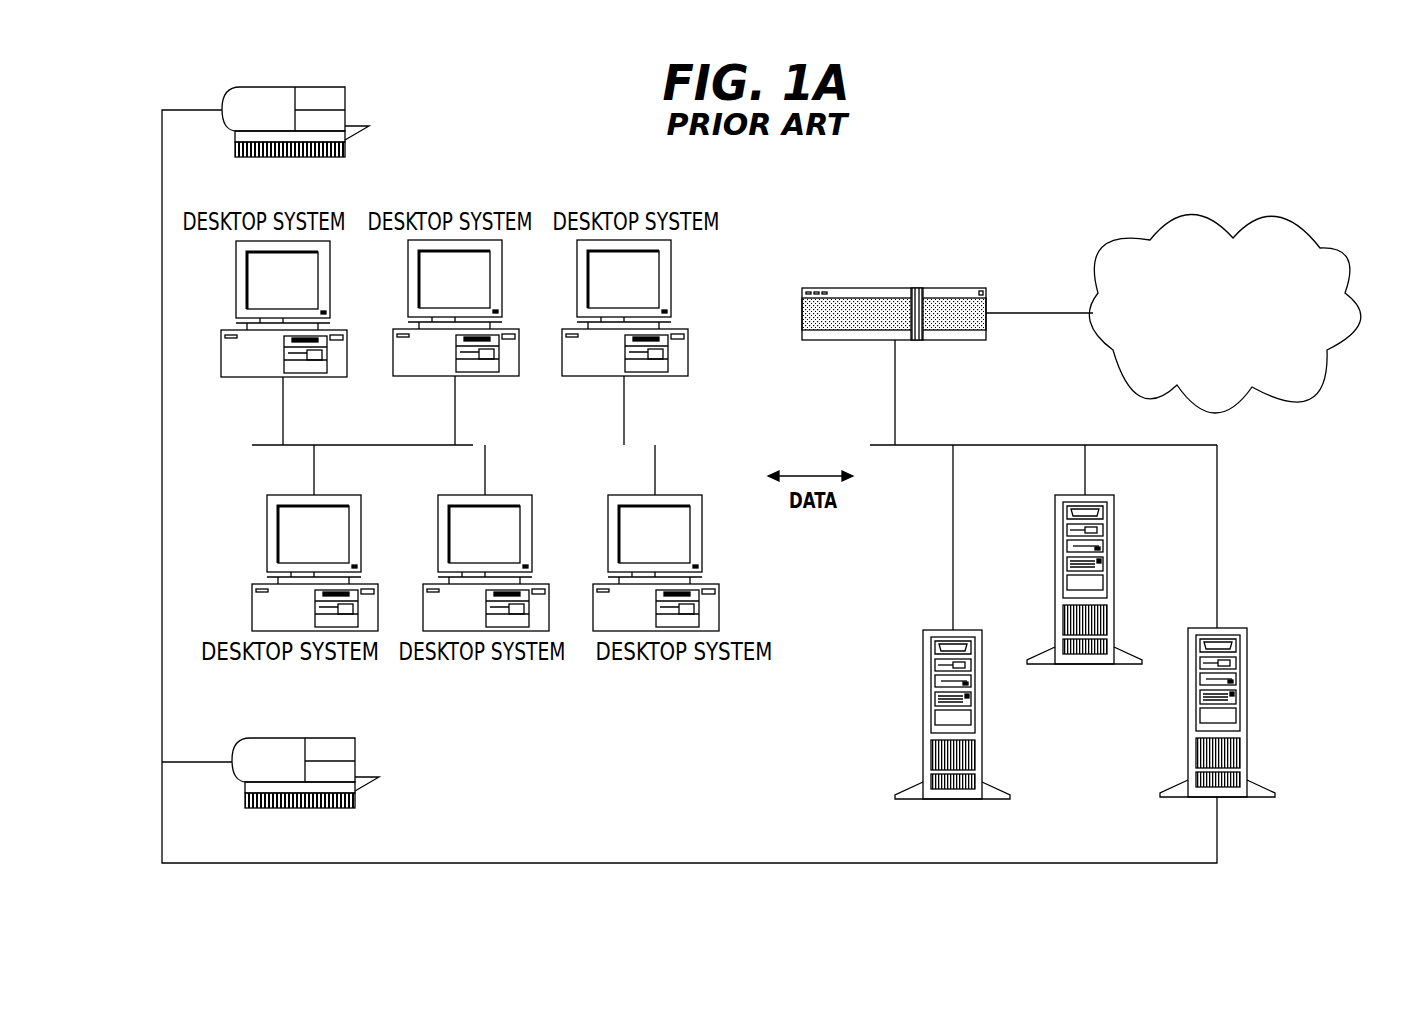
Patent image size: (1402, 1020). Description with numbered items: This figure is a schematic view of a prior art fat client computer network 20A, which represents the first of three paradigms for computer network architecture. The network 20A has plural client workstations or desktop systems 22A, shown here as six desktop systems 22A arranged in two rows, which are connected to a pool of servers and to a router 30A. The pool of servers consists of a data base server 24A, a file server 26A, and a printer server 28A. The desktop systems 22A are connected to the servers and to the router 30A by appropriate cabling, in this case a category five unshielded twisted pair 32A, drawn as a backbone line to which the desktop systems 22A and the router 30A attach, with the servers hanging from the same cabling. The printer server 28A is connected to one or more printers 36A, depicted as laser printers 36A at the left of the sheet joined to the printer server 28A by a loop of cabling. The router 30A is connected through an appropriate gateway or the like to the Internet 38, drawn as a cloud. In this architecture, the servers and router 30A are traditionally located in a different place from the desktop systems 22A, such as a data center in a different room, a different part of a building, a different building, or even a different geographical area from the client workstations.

The network 20A is at (1027, 187).
The desktop system 22A is at (665, 273).
The data base server 24A is at (980, 723).
The file server 26A is at (1110, 513).
The printer server 28A is at (1245, 660).
The router 30A is at (893, 292).
The category 5 unshielded twisted pair 32A is at (920, 445).
The printer 36A is at (340, 92).
The Internet 38 is at (1207, 232).